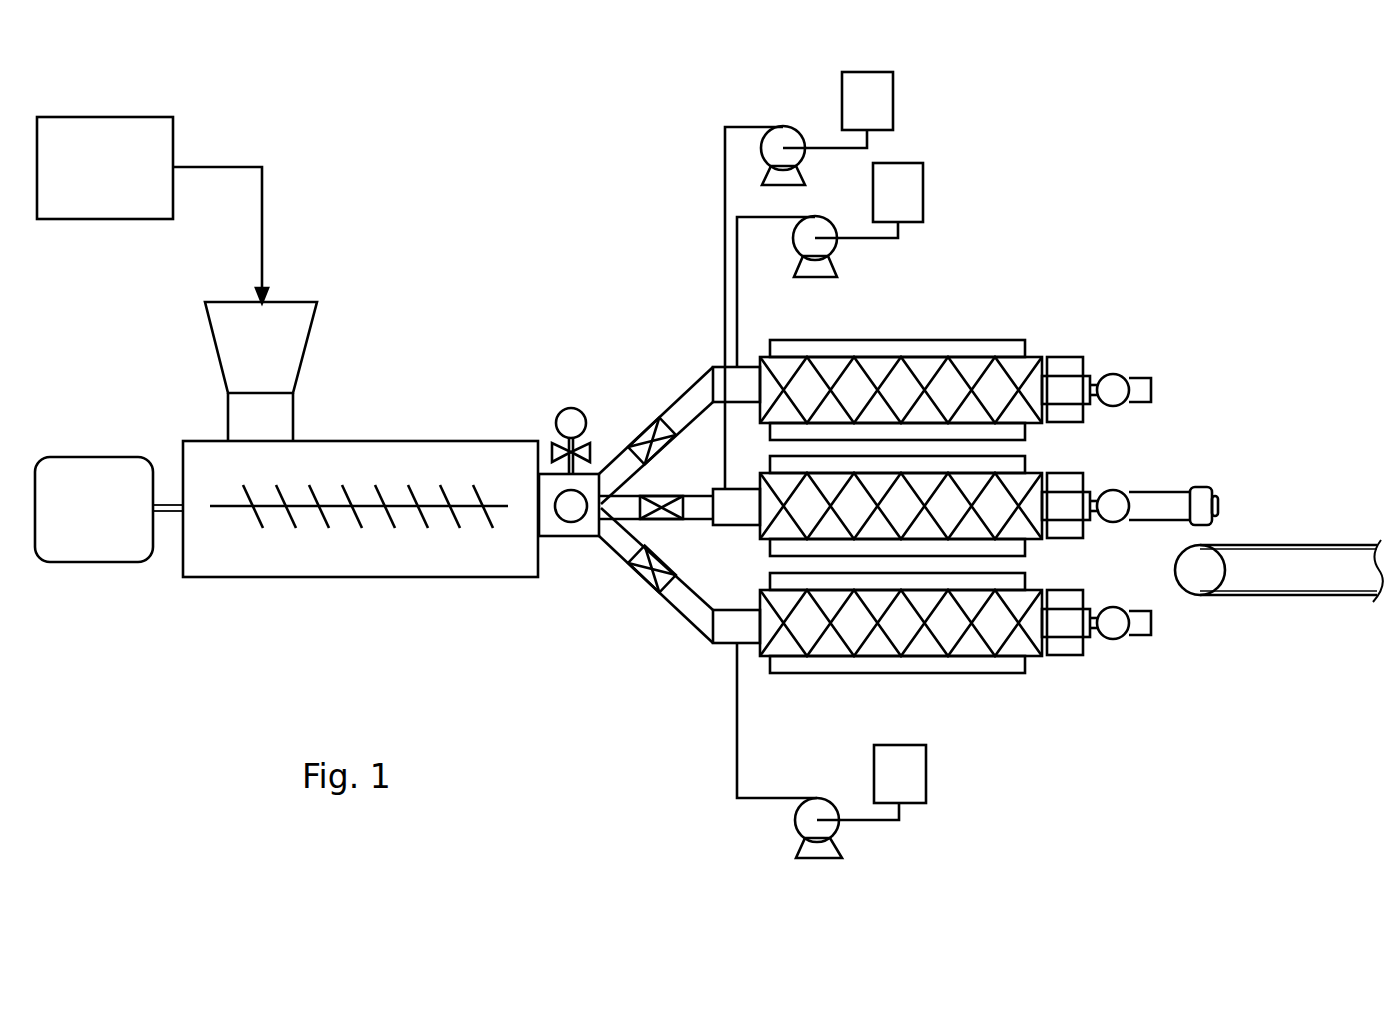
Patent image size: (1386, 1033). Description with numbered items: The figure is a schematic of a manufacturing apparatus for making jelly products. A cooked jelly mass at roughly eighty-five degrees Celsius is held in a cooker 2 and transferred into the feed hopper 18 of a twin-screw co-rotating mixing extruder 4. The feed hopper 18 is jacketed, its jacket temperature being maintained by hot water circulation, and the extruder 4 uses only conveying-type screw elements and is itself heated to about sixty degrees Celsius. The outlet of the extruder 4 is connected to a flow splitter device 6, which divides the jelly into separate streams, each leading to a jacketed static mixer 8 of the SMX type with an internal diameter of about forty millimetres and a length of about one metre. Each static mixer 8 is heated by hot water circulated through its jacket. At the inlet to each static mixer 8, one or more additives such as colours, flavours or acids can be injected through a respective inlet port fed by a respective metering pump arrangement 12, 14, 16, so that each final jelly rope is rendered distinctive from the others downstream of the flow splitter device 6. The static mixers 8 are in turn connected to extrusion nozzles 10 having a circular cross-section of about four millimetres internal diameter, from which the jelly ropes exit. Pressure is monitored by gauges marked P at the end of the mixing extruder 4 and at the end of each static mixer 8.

The cooker 2 is at (153, 115).
The twin-screw co-rotating mixing extruder 4 is at (408, 441).
The flow splitter device 6 is at (570, 538).
The jacketed static mixer 8 is at (982, 338).
The extrusion nozzle 10 is at (1170, 490).
The metering pump arrangement 12 is at (808, 85).
The metering pump arrangement 14 is at (847, 255).
The metering pump arrangement 16 is at (857, 837).
The feed hopper 18 is at (208, 341).